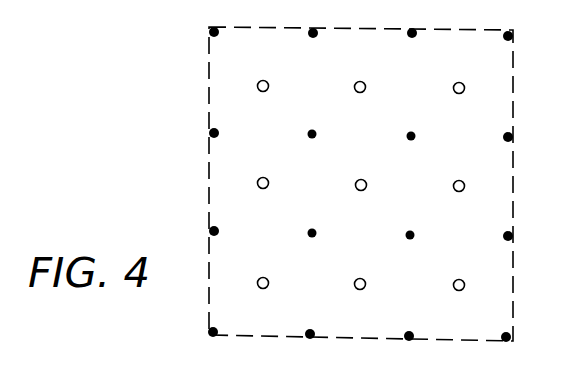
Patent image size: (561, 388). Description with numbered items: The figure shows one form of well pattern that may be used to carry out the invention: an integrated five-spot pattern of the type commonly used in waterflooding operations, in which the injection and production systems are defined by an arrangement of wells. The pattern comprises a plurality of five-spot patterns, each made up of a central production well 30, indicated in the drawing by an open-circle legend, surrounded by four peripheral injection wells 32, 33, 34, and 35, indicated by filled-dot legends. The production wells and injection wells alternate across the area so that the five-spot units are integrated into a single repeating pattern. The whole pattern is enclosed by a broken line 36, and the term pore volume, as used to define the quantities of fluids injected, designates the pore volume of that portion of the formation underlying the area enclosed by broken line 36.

The central production well 30 is at (366, 181).
The peripheral injection well 32 is at (310, 131).
The peripheral injection well 33 is at (410, 134).
The peripheral injection well 34 is at (414, 230).
The peripheral injection well 35 is at (310, 230).
The broken line 36 is at (208, 75).